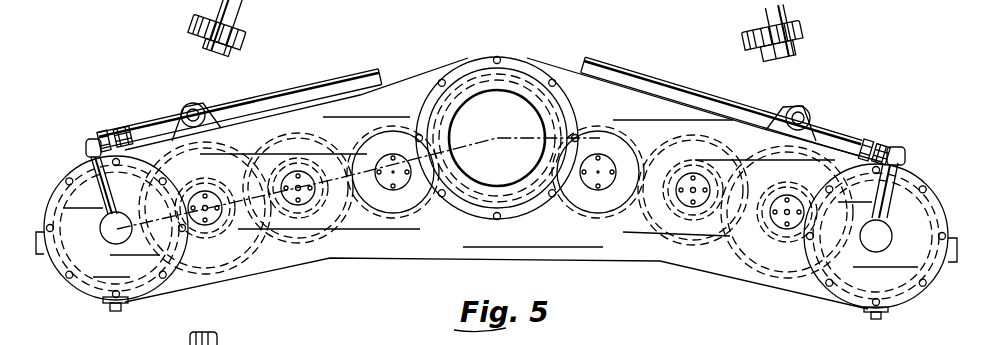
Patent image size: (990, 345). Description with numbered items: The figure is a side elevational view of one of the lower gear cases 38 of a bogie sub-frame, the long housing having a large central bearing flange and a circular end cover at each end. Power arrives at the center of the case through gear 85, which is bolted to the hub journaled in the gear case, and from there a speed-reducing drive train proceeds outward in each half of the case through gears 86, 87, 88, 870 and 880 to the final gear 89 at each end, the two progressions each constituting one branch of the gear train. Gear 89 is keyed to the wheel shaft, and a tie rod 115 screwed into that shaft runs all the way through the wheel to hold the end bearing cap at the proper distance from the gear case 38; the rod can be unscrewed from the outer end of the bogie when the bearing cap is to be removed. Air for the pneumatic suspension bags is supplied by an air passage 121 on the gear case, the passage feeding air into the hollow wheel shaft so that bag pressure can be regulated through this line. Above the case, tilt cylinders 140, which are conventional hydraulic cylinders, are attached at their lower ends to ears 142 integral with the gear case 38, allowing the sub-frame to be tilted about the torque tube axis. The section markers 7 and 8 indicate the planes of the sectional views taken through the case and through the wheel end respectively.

The gear case 38 is at (362, 258).
The gear 85 is at (466, 204).
The gear 86 is at (411, 210).
The gear 87 is at (338, 213).
The gear 88 is at (261, 240).
The gear 870 is at (318, 238).
The gear 880 is at (199, 230).
The gear 89 is at (97, 290).
The tie rod 115 is at (218, 338).
The air passage 121 is at (893, 205).
The tilt cylinder 140 is at (243, 31).
The ear 142 is at (181, 116).
The section line 7- 7 is at (117, 90).
The section line 8- 8 is at (116, 336).